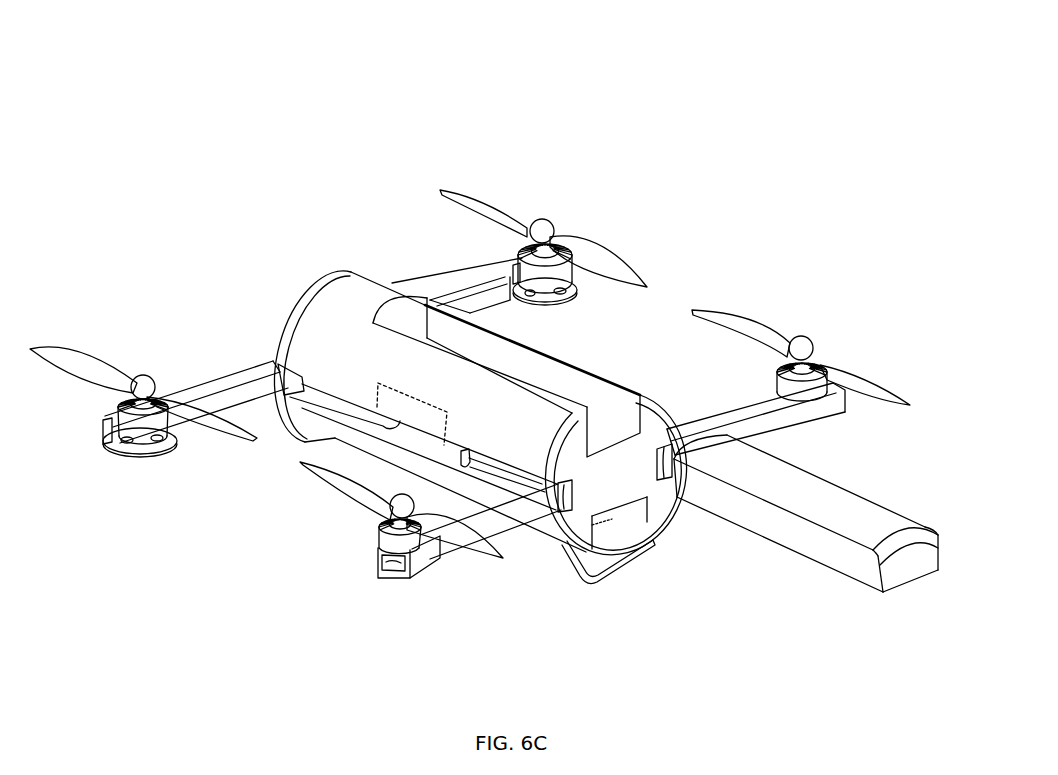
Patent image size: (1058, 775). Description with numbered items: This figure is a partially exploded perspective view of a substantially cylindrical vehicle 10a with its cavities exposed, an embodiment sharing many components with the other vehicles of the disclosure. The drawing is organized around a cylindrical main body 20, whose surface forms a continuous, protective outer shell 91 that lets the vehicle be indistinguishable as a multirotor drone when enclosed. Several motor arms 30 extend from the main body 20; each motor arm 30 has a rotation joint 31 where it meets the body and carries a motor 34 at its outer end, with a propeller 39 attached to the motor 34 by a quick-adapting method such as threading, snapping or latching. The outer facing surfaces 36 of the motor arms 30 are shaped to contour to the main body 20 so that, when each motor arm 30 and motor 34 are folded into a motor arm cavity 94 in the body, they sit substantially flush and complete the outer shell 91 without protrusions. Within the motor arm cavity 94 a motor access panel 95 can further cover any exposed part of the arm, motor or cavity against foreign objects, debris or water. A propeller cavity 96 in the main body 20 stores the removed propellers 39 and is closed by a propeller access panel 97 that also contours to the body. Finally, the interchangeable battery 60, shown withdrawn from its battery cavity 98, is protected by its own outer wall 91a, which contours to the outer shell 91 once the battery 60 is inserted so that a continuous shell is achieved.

The substantially cylindrical vehicle 10a is at (491, 366).
The main body 20 is at (435, 356).
The motor arm 30 is at (195, 356).
The rotation joint 31 is at (222, 303).
The motor 34 is at (384, 548).
The outer facing surface 36 is at (468, 613).
The propeller 39 is at (586, 226).
The battery 60 is at (806, 551).
The outer shell 91 is at (317, 284).
The outer wall 91a is at (813, 500).
The motor arm cavity 94 is at (312, 478).
The motor access panel 95 is at (235, 461).
The propeller cavity 96 is at (673, 570).
The propeller access panel 97 is at (630, 616).
The battery cavity 98 is at (582, 350).